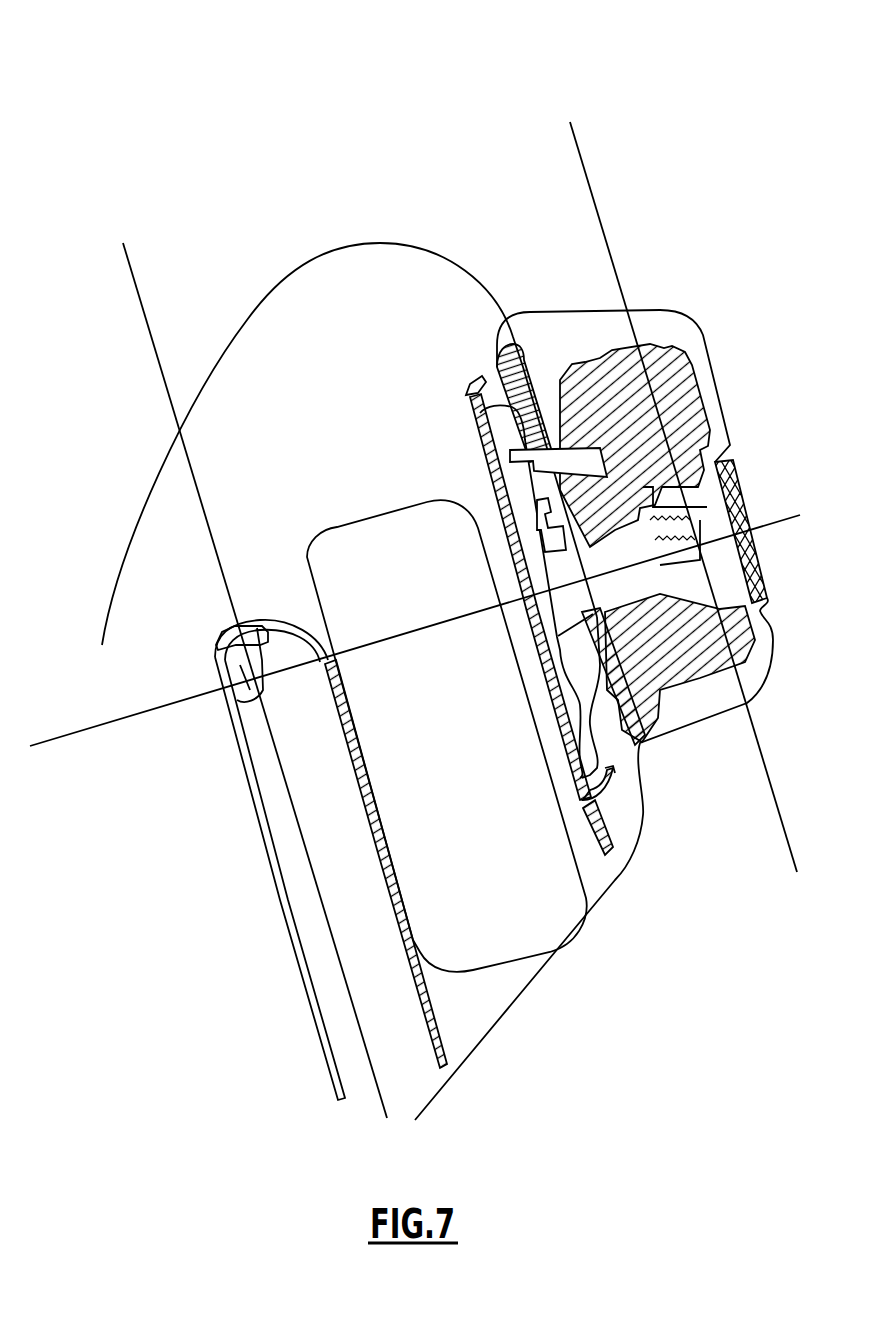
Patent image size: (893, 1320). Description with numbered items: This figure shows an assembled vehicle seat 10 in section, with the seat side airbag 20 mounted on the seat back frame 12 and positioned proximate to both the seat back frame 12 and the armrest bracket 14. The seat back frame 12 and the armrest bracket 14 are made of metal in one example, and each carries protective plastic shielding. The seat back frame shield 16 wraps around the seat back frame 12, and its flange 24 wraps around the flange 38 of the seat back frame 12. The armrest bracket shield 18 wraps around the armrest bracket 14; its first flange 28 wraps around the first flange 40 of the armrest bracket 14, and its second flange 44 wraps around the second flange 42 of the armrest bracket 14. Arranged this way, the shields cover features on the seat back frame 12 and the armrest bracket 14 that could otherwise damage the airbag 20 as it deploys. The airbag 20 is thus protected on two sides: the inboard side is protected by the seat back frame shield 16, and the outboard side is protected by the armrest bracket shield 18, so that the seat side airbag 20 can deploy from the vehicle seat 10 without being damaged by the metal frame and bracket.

The vehicle seat 10 is at (660, 64).
The seat back frame 12 is at (333, 713).
The armrest bracket 14 is at (600, 758).
The seat back frame shield 16 is at (433, 1013).
The armrest bracket shield 18 is at (491, 484).
The seat side airbag 20 is at (548, 930).
The flange 24 is at (257, 628).
The first flange 28 is at (470, 383).
The flange 38 is at (262, 670).
The first flange 40 is at (527, 380).
The second flange 42 is at (597, 778).
The second flange 44 is at (608, 810).